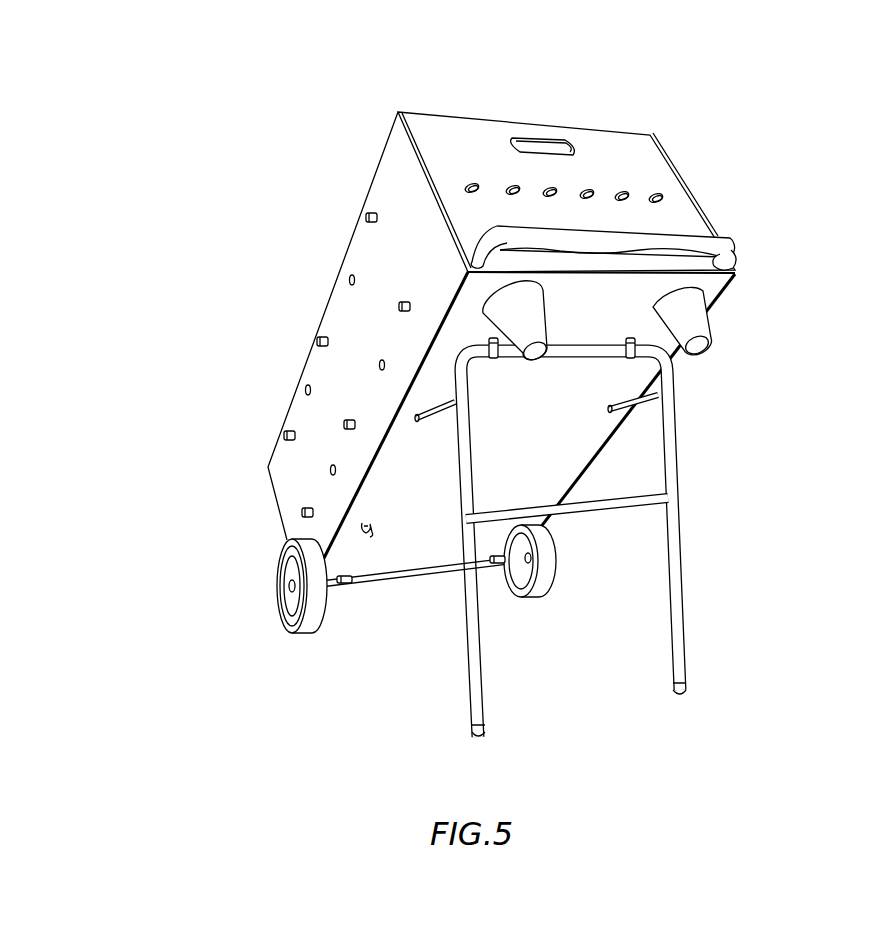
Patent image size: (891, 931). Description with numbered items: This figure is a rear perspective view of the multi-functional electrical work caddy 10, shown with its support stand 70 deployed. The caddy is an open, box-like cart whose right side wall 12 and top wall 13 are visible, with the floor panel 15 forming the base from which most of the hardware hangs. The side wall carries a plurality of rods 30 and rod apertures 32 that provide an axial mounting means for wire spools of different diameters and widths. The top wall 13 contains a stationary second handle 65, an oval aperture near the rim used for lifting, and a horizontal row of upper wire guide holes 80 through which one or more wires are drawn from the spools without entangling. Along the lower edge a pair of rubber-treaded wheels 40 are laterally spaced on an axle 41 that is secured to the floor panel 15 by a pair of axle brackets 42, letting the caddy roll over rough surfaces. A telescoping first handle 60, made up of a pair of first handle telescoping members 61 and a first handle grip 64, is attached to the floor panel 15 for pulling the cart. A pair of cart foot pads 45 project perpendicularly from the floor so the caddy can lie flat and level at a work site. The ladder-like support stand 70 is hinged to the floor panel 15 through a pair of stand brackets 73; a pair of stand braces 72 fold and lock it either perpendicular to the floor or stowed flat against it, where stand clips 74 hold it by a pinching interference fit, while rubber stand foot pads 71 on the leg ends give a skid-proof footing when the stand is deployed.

The multi-functional electrical work caddy 10 is at (122, 181).
The right side wall 12 is at (393, 137).
The top wall 13 is at (462, 130).
The floor panel 15 is at (722, 290).
The rods 30 is at (366, 215).
The rod apertures 32 is at (349, 280).
The wheels 40 is at (298, 632).
The axle 41 is at (289, 586).
The axle brackets 42 is at (345, 583).
The cart foot pads 45 is at (490, 294).
The telescoping first handle 60 is at (742, 237).
The first handle telescoping members 61 is at (483, 244).
The first handle grip 64 is at (693, 240).
The stationary second handle 65 is at (541, 138).
The support stand 70 is at (473, 688).
The stand foot pads 71 is at (484, 736).
The stand braces 72 is at (440, 410).
The stand brackets 73 is at (627, 357).
The stand clips 74 is at (370, 531).
The upper wire guide holes 80 is at (656, 194).